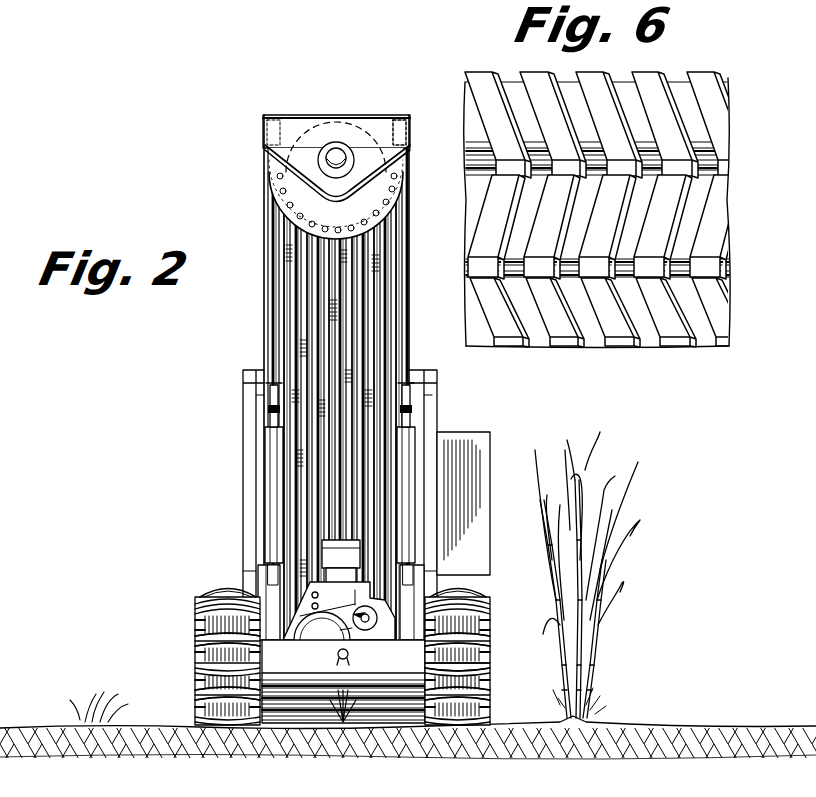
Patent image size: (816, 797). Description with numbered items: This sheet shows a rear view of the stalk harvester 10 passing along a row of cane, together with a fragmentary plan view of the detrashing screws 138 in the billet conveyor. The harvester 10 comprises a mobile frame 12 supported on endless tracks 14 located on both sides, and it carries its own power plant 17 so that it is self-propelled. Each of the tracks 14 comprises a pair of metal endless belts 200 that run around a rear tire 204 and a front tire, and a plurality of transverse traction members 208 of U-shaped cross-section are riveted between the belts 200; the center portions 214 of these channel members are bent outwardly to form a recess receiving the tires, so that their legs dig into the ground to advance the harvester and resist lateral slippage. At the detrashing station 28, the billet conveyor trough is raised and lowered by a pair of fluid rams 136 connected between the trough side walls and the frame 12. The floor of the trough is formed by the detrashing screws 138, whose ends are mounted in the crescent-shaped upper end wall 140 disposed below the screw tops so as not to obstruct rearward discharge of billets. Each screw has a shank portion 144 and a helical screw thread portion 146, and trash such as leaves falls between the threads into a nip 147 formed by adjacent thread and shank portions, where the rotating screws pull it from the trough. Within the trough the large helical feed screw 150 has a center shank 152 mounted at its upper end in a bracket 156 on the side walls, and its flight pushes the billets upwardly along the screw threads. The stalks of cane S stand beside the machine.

In FIG. 2, the stalk harvester 10 is at (222, 350).
In FIG. 2, the mobile frame 12 is at (262, 577).
In FIG. 2, the endless tracks 14 is at (430, 680).
In FIG. 2, the power plant 17 is at (305, 634).
In FIG. 2, the detrashing station 28 is at (400, 128).
In FIG. 2, the fluid rams 136 is at (280, 494).
In FIG. 2, the detrashing screws 138 is at (383, 313).
In FIG. 6, the detrashing screws 138 is at (588, 206).
In FIG. 2, the upper end wall 140 is at (281, 203).
In FIG. 6, the shank portion 144 is at (588, 233).
In FIG. 6, the helical screw thread portion 146 is at (500, 265).
In FIG. 6, the nip 147 is at (650, 272).
In FIG. 2, the feed screw 150 is at (302, 181).
In FIG. 2, the center shank 152 is at (340, 150).
In FIG. 2, the bracket 156 is at (297, 125).
In FIG. 2, the endless belts 200 is at (205, 652).
In FIG. 2, the rear tire 204 is at (208, 625).
In FIG. 2, the traction members 208 is at (478, 640).
In FIG. 2, the center portions 214 is at (222, 592).
In FIG. 2, the sugar cane stalk S is at (590, 630).